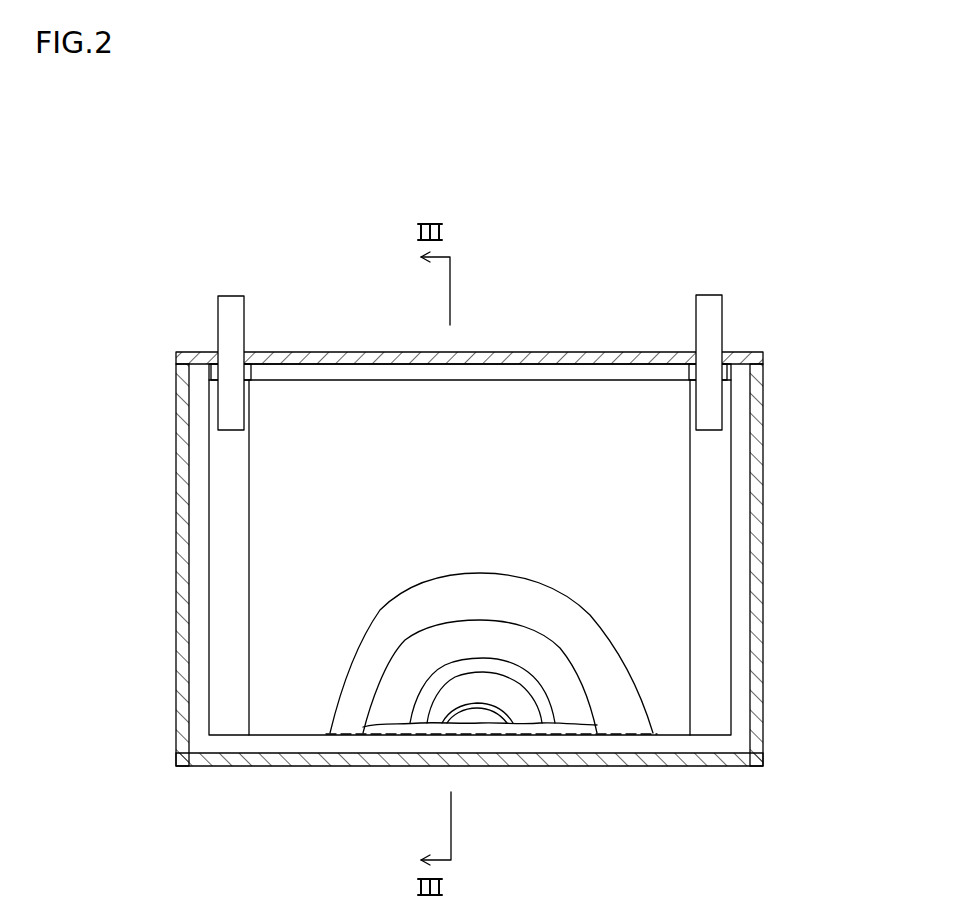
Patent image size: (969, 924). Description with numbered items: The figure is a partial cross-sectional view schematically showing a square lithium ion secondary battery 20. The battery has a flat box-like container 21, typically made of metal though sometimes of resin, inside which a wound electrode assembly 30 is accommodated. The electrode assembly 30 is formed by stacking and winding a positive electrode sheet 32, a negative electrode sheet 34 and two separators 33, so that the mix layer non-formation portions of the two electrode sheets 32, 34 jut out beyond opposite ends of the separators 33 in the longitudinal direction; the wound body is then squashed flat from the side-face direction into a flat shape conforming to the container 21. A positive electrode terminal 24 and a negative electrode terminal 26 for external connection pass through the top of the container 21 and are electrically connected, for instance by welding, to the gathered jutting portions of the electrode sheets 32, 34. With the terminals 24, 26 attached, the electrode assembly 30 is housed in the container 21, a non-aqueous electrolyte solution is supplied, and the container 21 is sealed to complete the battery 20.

The lithium ion secondary battery 20 is at (762, 217).
The container 21 is at (764, 640).
The positive electrode terminal 24 is at (245, 315).
The negative electrode terminal 26 is at (722, 310).
The wound electrode assembly 30 is at (553, 400).
The positive electrode sheet 32 is at (578, 680).
The separator 33 is at (394, 717).
The negative electrode sheet 34 is at (490, 707).